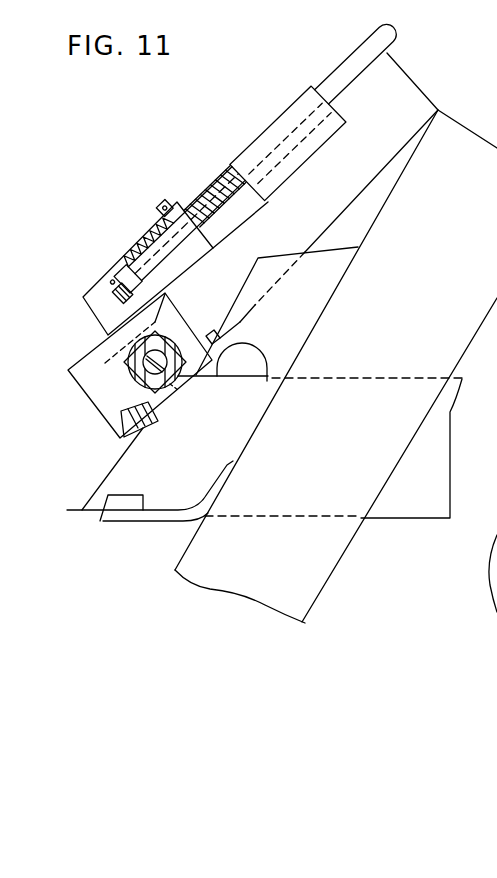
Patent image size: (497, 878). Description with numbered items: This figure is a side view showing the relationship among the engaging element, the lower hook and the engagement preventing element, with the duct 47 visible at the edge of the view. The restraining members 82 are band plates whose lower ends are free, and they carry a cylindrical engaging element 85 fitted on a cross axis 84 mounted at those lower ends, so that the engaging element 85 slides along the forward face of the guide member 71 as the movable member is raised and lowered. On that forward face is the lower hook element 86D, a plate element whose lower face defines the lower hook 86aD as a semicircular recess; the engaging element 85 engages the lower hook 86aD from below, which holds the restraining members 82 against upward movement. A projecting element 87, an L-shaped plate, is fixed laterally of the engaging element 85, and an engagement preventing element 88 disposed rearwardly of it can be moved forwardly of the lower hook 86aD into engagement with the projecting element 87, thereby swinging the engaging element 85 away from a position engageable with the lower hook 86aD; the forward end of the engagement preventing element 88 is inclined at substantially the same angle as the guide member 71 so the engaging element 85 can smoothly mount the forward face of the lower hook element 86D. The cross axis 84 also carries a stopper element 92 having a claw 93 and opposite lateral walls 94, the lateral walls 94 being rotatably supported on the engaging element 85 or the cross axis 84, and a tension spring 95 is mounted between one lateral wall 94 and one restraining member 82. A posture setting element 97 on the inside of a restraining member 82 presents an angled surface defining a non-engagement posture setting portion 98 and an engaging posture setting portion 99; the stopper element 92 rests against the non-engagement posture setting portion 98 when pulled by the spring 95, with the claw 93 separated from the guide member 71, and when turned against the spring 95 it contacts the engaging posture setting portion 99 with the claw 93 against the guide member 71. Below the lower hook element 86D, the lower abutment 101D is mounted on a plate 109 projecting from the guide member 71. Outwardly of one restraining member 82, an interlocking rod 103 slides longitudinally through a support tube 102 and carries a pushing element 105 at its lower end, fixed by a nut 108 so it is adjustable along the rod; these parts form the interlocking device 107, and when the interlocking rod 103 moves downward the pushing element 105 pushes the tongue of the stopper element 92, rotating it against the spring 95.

The restraining member 82 is at (372, 82).
The interlocking device 107 is at (281, 109).
The support tube 102 is at (260, 140).
The interlocking rod 103 is at (220, 187).
The pushing element 105 is at (170, 208).
The tension spring 95 is at (143, 233).
The nut 108 is at (117, 272).
The stopper element 92 is at (96, 337).
The posture setting element 97 is at (200, 276).
The non-engagement posture setting portion 98 is at (172, 322).
The engaging posture setting portion 99 is at (222, 337).
The lateral wall 94 is at (77, 371).
The engaging element 85 is at (130, 376).
The cross axis 84 is at (164, 369).
The projecting element 87 is at (170, 393).
The claw 93 is at (127, 433).
The lower hook element 86D is at (333, 297).
The lower hook 86aD is at (265, 358).
The engagement preventing element 88 is at (125, 458).
The guide member 71 is at (338, 536).
The plate 109 is at (172, 521).
The lower abutment 101D is at (100, 521).
The duct 47 is at (494, 612).